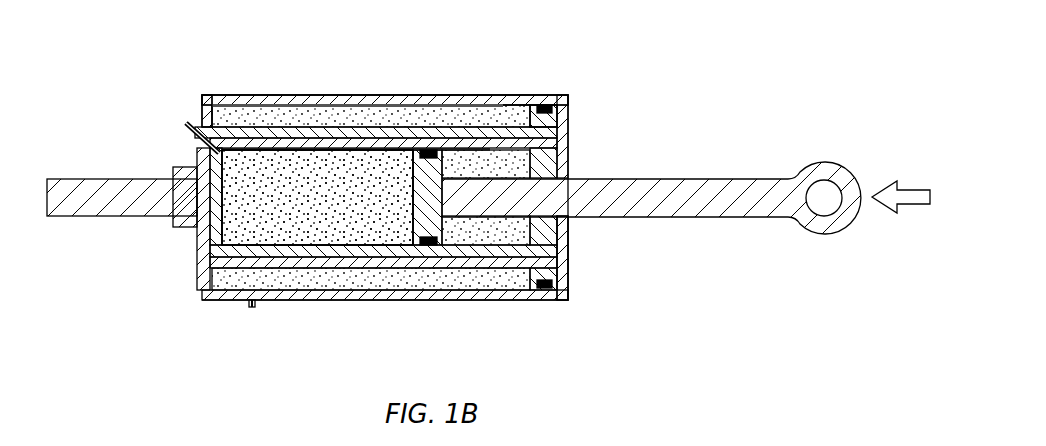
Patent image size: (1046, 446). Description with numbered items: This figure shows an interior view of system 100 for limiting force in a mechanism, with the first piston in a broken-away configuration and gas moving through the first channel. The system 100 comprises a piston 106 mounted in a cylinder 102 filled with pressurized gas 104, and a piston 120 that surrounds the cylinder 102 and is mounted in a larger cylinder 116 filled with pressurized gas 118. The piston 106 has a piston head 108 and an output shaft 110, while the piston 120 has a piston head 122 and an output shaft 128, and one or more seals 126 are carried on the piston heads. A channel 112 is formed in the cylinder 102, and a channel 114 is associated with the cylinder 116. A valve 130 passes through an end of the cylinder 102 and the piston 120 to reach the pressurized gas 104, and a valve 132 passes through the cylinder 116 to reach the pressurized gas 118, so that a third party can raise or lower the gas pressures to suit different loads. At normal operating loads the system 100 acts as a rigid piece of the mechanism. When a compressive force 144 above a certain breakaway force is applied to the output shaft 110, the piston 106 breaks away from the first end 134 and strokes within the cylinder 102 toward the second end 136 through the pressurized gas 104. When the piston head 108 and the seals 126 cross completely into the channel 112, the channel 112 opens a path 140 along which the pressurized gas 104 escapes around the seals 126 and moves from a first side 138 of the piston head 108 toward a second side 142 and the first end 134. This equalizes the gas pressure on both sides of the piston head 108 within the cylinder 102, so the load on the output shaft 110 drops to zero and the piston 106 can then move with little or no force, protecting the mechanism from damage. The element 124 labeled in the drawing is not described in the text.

The system 100 is at (766, 78).
The cylinder 102 is at (491, 259).
The pressurized gas 104 is at (359, 236).
The piston 106 is at (472, 222).
The piston head 108 is at (443, 208).
The output shaft 110 is at (748, 176).
The channel 112 is at (397, 157).
The channel 114 is at (501, 114).
The cylinder 116 is at (277, 93).
The pressurized gas 118 is at (488, 112).
The piston 120 is at (345, 95).
The piston head 122 is at (533, 115).
The housing end wall 124 is at (198, 113).
The seals 126 is at (551, 105).
The output shaft 128 is at (110, 217).
The valve 130 is at (184, 121).
The valve 132 is at (250, 309).
The first end 134 is at (584, 272).
The second end 136 is at (143, 160).
The first side 138 is at (300, 236).
The path 140 is at (437, 150).
The second side 142 is at (493, 228).
The compressive force 144 is at (906, 192).